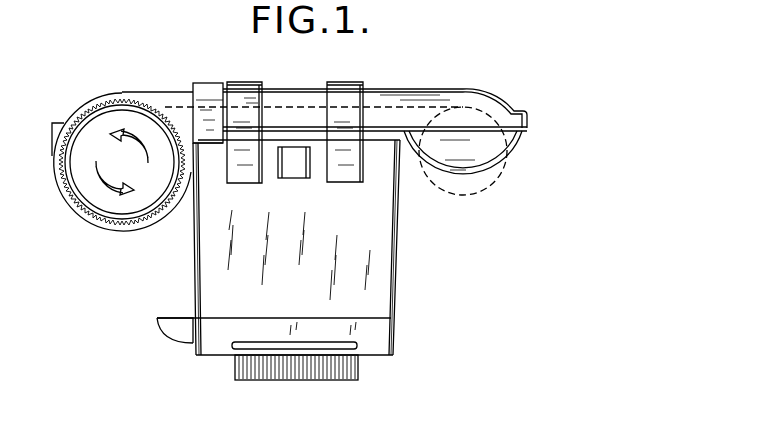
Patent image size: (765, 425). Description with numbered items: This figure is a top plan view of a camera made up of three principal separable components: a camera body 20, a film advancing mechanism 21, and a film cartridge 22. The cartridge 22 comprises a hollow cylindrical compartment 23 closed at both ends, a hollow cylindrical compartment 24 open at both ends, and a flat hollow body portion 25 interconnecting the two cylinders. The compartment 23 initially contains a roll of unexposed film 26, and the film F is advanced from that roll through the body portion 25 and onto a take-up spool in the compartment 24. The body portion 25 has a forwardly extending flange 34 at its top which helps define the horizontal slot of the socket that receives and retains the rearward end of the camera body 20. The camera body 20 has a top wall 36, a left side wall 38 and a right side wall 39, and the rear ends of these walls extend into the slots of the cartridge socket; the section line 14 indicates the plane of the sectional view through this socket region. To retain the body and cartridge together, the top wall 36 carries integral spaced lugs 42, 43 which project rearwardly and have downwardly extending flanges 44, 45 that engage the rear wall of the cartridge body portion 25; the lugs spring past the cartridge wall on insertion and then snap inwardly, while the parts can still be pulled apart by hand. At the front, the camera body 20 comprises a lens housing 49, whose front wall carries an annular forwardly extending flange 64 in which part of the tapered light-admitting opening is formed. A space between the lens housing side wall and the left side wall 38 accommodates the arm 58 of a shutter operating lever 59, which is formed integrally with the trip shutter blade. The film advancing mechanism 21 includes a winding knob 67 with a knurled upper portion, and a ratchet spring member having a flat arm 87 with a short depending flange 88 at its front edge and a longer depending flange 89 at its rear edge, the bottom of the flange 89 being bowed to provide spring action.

The film F is at (175, 107).
The section line 14- 14 is at (410, 58).
The camera body 20 is at (398, 270).
The film advancing mechanism 21 is at (93, 229).
The film cartridge 22 is at (493, 88).
The hollow cylindrical compartment 23 is at (503, 178).
The hollow cylindrical compartment 24 is at (143, 230).
The flat hollow body portion 25 is at (293, 92).
The roll of unexposed film 26 is at (505, 152).
The forwardly extending flange 34 is at (410, 127).
The top wall 36 is at (348, 297).
The left side wall 38 is at (193, 273).
The right side wall 39 is at (398, 247).
The lug 42 is at (238, 90).
The lug 43 is at (345, 90).
The downwardly extending flange 44 is at (258, 85).
The downwardly extending flange 45 is at (367, 88).
The lens housing 49 is at (212, 358).
The arm 58 is at (173, 318).
The shutter operating lever 59 is at (167, 333).
The annular forwardly extending flange 64 is at (302, 372).
The winding knob 67 is at (72, 203).
The flat arm 87 is at (203, 115).
The short depending flange 88 is at (213, 147).
The longer depending flange 89 is at (205, 82).